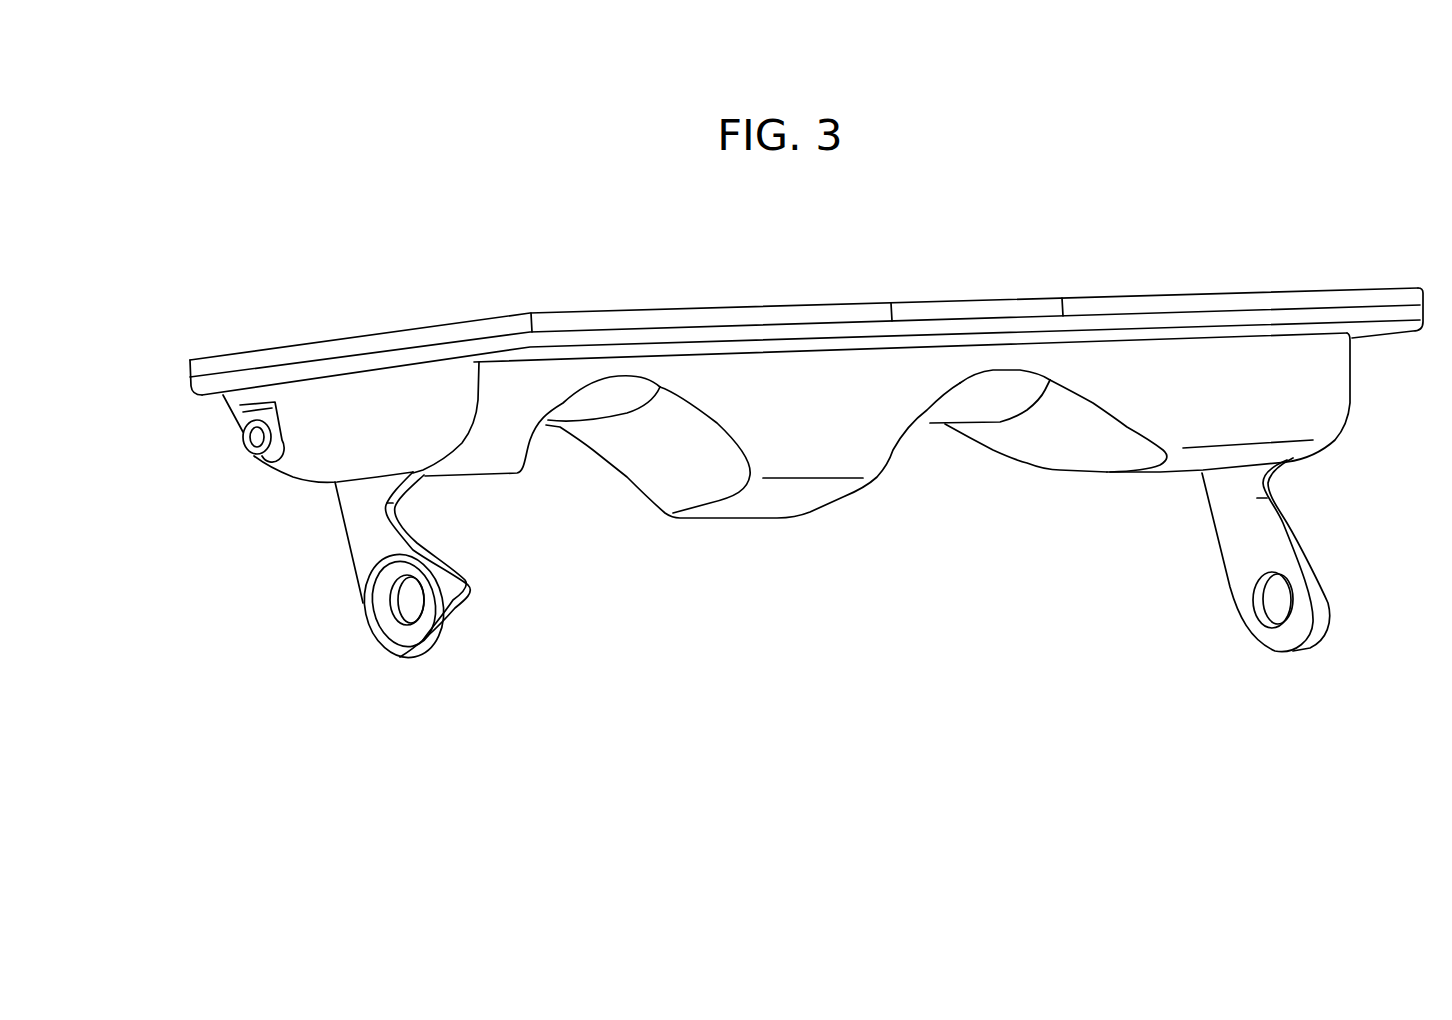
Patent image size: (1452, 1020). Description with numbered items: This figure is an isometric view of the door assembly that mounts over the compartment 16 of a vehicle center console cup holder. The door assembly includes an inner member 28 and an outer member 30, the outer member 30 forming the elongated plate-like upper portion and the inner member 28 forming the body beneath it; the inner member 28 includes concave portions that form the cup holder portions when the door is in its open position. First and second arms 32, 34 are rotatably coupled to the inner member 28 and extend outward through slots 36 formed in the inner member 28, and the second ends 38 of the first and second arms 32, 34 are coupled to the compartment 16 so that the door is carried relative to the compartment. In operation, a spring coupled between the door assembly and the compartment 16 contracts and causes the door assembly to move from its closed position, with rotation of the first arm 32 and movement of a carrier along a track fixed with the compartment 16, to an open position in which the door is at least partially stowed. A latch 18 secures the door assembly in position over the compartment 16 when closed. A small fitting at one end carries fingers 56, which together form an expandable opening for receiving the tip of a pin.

The compartment 16 is at (965, 513).
The latch 18 is at (988, 302).
The inner member 28 is at (733, 518).
The outer member 30 is at (640, 310).
The first arm 32 is at (1228, 587).
The second arm 34 is at (363, 603).
The slots 36 is at (433, 478).
The second ends 38 is at (430, 640).
The fingers 56 is at (247, 452).